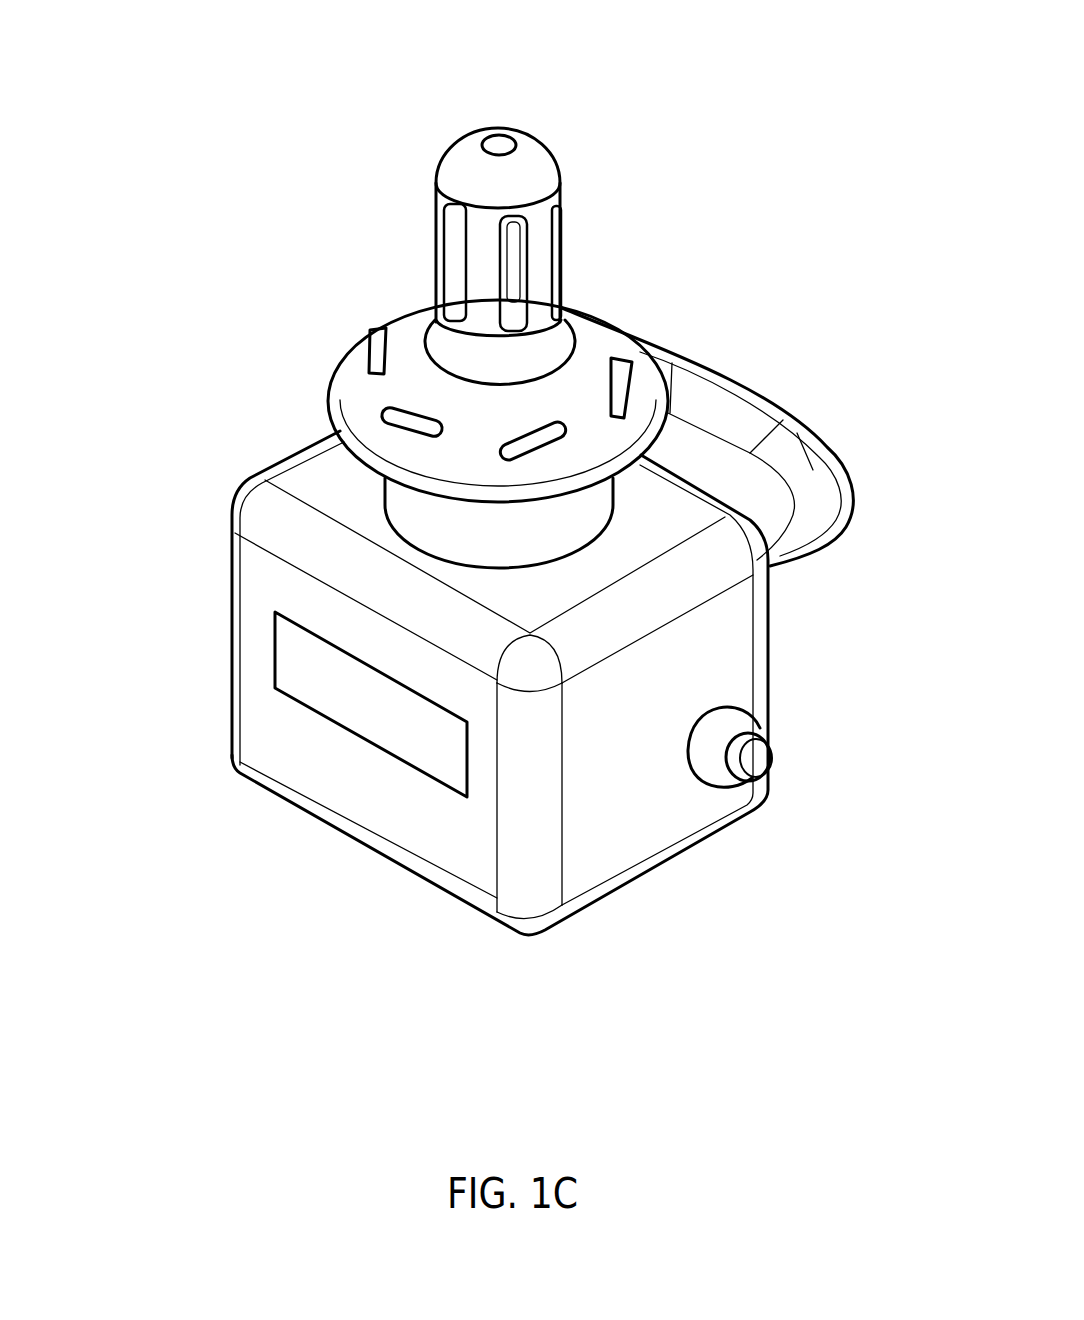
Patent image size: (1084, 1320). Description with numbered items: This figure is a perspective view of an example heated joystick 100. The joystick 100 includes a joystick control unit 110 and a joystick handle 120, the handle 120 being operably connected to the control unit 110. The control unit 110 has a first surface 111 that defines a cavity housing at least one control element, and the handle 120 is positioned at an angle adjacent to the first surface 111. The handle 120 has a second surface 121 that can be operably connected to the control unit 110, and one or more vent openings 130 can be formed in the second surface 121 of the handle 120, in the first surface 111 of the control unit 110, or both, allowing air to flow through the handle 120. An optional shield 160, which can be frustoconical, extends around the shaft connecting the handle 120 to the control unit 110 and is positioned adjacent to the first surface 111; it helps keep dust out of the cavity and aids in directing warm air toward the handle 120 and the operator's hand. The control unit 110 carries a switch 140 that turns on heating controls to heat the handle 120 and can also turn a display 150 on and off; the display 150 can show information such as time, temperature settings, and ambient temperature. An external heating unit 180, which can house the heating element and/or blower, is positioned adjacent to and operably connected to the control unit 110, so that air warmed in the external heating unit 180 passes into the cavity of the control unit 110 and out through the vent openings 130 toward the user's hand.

The joystick 100 is at (121, 84).
The joystick control unit 110 is at (263, 587).
The first surface 111 is at (547, 588).
The joystick handle 120 is at (547, 238).
The second surface 121 is at (600, 366).
The vent openings 130 is at (457, 238).
The switch 140 is at (755, 765).
The display 150 is at (427, 733).
The shield 160 is at (423, 523).
The external heating unit 180 is at (755, 454).